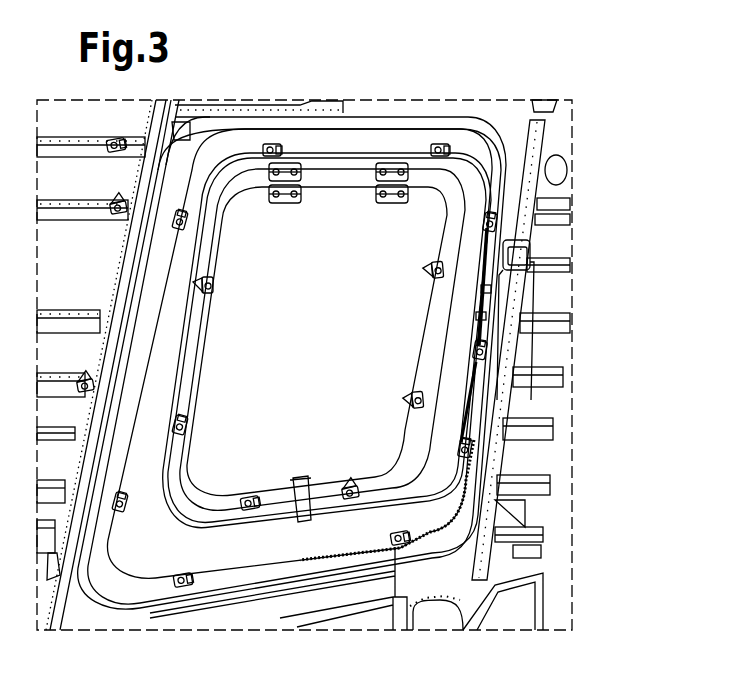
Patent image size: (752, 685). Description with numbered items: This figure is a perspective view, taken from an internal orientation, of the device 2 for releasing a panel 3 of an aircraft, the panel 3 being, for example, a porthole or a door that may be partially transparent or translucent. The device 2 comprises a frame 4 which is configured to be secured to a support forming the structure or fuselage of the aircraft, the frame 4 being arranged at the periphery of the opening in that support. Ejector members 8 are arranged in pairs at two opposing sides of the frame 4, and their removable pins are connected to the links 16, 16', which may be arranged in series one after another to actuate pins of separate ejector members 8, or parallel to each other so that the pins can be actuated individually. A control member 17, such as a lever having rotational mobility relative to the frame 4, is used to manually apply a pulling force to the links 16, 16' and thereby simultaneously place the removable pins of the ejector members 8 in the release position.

The device 2 is at (485, 106).
The panel 3 is at (405, 325).
The frame 4 is at (448, 508).
The ejector members 8 is at (492, 230).
The link 16 is at (433, 291).
The link 16' is at (405, 399).
The control member 17 is at (530, 245).